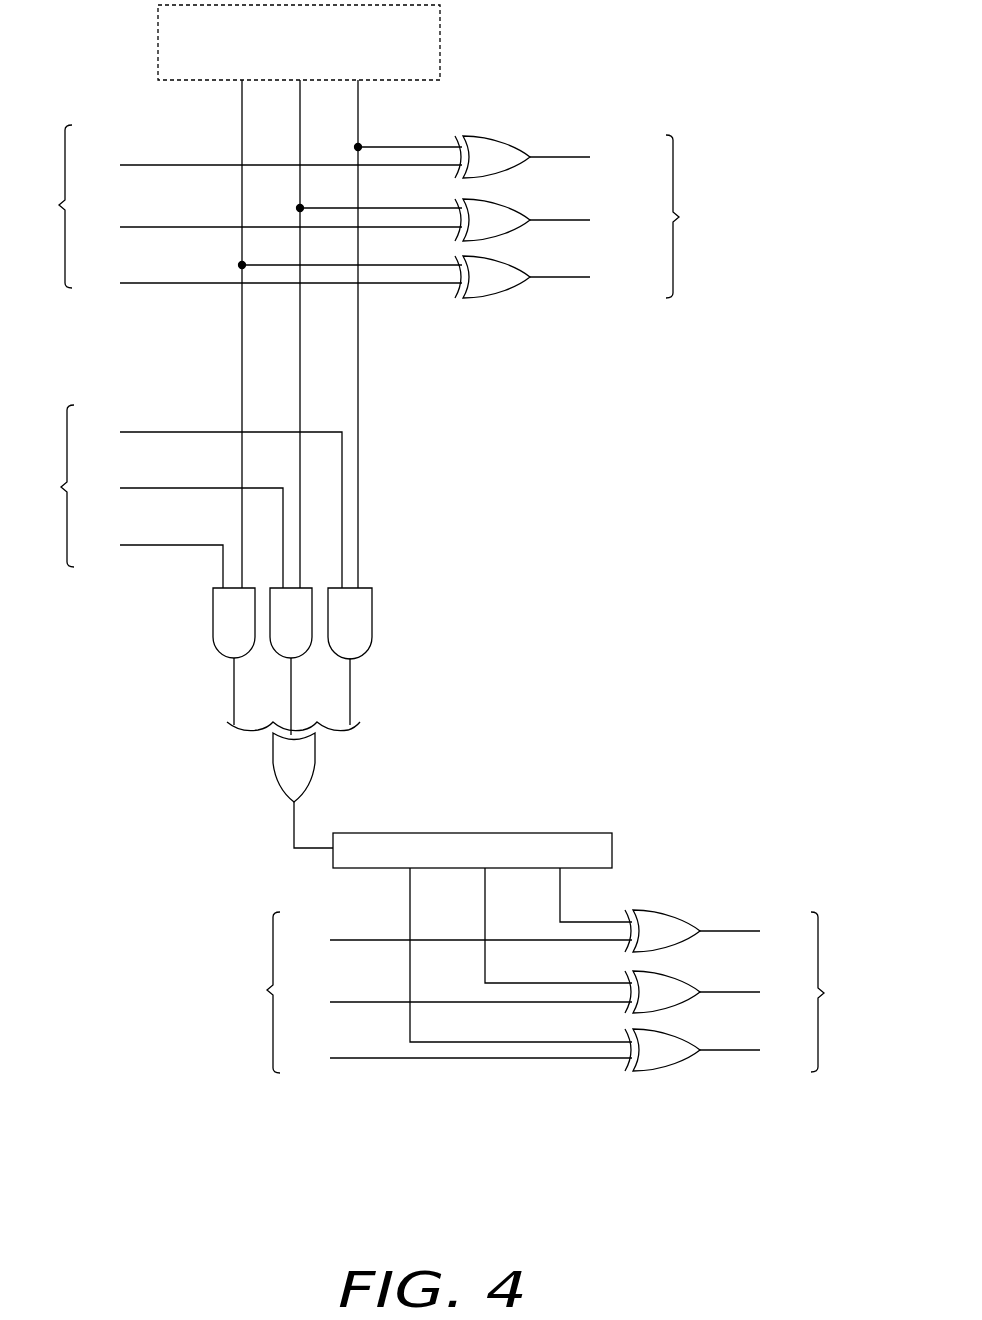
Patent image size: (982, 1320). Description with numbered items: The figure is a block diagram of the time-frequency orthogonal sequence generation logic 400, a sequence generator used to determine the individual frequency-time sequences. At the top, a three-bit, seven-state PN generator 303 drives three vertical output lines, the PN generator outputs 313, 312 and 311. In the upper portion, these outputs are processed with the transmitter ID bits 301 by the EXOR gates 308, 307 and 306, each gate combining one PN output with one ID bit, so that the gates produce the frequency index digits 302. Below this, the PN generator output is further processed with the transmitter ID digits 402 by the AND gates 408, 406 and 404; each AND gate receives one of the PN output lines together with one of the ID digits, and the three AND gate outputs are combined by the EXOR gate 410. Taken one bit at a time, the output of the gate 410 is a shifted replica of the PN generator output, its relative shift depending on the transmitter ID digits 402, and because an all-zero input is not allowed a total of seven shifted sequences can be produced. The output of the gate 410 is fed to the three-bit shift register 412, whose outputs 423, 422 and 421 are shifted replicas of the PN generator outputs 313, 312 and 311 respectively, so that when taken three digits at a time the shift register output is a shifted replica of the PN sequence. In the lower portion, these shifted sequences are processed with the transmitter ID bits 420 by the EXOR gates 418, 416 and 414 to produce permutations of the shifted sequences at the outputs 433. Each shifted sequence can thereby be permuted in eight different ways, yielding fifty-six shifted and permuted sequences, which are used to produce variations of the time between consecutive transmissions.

The time-frequency orthogonal sequence generation logic 400 is at (811, 33).
The PN generator 303 is at (445, 47).
The PN generator output 311 is at (360, 132).
The PN generator output 312 is at (298, 163).
The PN generator output 313 is at (240, 160).
The transmitter ID bits 301 is at (65, 122).
The index digits 302 is at (672, 130).
The EXOR gate 306 is at (524, 150).
The EXOR gate 307 is at (524, 212).
The EXOR gate 308 is at (524, 270).
The transmitter ID digits 402 is at (68, 572).
The AND gate 404 is at (372, 610).
The AND gate 406 is at (308, 650).
The AND gate 408 is at (213, 631).
The EXOR gate 410 is at (272, 770).
The shift register 412 is at (612, 842).
The shift register output 421 is at (560, 878).
The shift register output 422 is at (485, 878).
The shift register output 423 is at (410, 878).
The EXOR gate 414 is at (688, 924).
The EXOR gate 416 is at (688, 985).
The EXOR gate 418 is at (688, 1043).
The transmitter ID bits 420 is at (274, 1078).
The outputs 433 is at (820, 910).